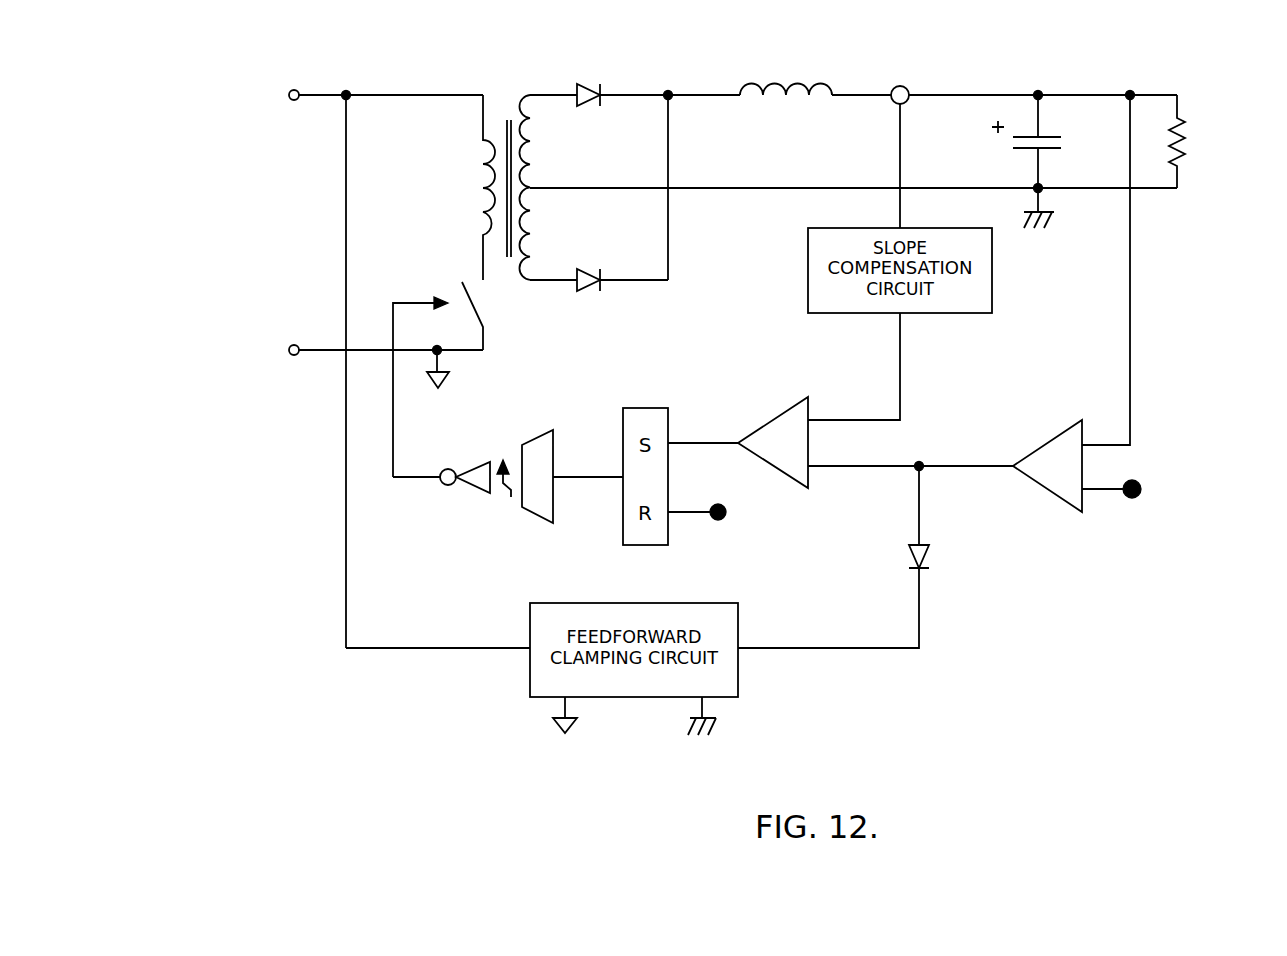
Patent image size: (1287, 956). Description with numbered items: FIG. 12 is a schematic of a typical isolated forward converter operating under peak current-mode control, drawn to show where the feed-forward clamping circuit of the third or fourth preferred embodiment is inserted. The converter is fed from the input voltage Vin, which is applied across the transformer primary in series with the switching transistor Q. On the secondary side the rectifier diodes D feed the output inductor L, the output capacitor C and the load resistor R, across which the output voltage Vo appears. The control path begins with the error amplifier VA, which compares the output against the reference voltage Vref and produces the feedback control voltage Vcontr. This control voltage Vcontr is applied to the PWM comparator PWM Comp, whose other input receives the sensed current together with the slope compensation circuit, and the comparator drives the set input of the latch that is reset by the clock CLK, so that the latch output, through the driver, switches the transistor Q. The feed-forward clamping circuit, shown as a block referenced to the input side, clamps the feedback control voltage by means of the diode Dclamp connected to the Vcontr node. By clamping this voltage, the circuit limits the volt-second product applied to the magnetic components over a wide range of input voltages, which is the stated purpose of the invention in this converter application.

The input voltage Vin is at (277, 118).
The switching transistor Q is at (453, 379).
The rectifier diode D is at (599, 169).
The output inductor L is at (786, 72).
The output capacitor C is at (1041, 141).
The load resistor R is at (1191, 141).
The output voltage Vo is at (1227, 97).
The PWM comparator PWM Comp is at (781, 424).
The control voltage Vcontr is at (910, 481).
The voltage error amplifier VA is at (1067, 303).
The reference voltage Vref is at (1139, 489).
The clamping diode Dclamp is at (968, 519).
The clock input CLK is at (707, 530).